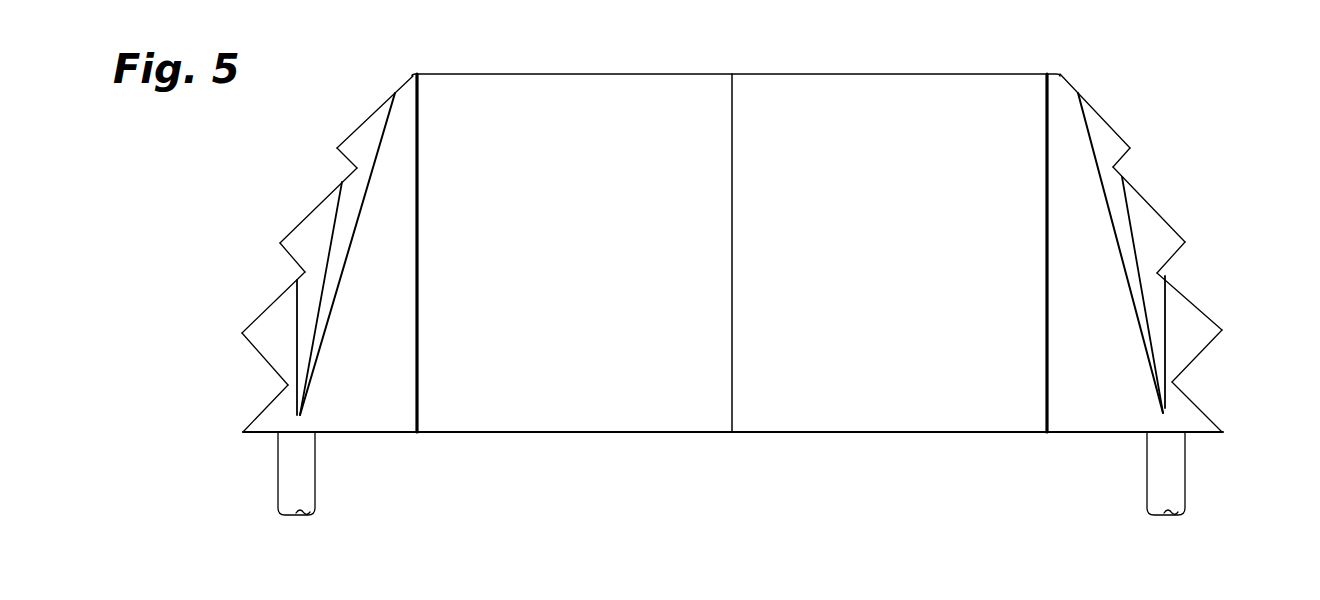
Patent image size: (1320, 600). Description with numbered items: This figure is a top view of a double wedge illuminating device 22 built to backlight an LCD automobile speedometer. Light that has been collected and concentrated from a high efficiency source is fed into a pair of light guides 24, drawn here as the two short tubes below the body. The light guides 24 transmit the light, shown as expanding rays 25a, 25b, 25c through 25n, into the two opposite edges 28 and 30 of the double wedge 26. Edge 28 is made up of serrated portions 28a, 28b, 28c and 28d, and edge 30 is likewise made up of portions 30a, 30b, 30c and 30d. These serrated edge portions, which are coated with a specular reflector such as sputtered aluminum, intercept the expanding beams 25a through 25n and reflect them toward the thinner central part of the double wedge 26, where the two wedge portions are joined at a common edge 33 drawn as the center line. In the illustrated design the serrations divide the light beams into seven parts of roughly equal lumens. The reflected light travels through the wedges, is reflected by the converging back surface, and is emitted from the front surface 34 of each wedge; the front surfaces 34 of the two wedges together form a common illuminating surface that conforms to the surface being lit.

The double wedge illuminating device 22 is at (625, 458).
The light guides 24 is at (278, 476).
The light ray 25a is at (278, 398).
The light ray 25b is at (297, 280).
The light ray 25c is at (342, 182).
The light ray 25n is at (395, 93).
The double wedge 26 is at (382, 433).
The edge 28 is at (260, 254).
The edge portion 28a is at (253, 422).
The edge portion 28b is at (257, 318).
The edge portion 28c is at (285, 238).
The edge portion 28d is at (360, 130).
The edge 30 is at (1187, 251).
The edge portion 30a is at (1208, 418).
The edge portion 30b is at (1199, 310).
The edge portion 30c is at (1166, 222).
The edge portion 30d is at (1103, 120).
The common edge 33 is at (733, 397).
The front surface 34 is at (673, 284).